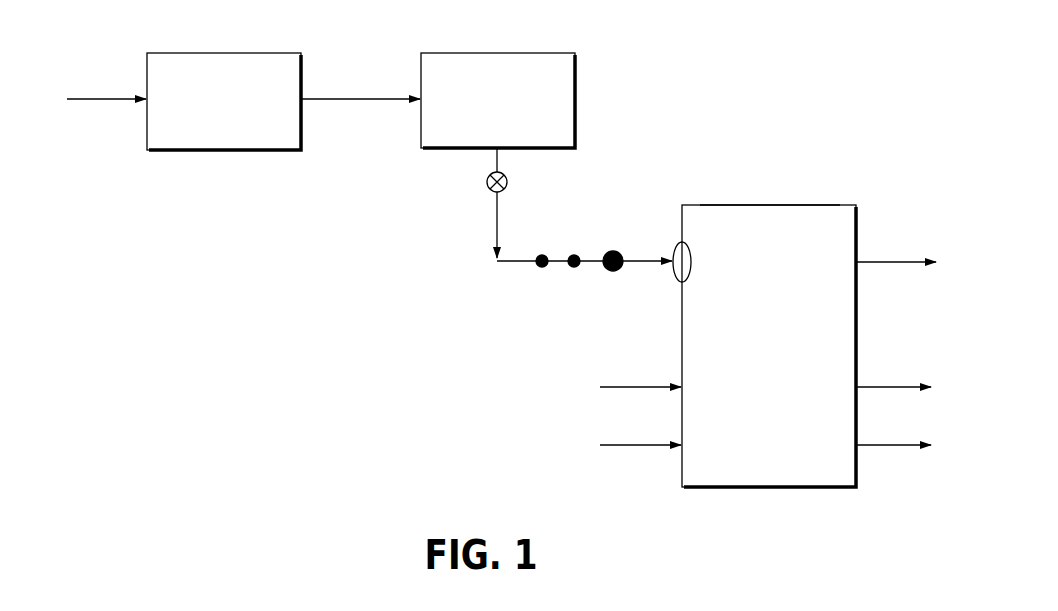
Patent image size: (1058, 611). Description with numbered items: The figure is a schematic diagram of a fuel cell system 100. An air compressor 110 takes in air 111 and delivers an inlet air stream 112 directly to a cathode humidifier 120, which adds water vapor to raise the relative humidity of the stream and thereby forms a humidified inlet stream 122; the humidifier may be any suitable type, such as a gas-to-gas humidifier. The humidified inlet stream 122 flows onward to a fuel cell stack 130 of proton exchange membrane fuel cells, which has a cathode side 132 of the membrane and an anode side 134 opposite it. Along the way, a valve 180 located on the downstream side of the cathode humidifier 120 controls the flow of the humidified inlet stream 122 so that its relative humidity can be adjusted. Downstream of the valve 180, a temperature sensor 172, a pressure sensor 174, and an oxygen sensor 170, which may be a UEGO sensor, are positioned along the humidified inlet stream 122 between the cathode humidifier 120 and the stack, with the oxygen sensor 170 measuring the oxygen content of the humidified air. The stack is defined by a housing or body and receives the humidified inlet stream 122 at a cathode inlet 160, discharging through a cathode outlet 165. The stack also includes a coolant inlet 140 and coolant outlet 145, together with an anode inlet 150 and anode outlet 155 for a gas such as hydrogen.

The fuel cell system 100 is at (756, 90).
The air compressor 110 is at (224, 101).
The air 111 is at (102, 97).
The inlet air stream 112 is at (372, 97).
The cathode humidifier 120 is at (498, 100).
The humidified inlet stream 122 is at (498, 225).
The valve 180 is at (486, 182).
The temperature sensor 172 is at (542, 254).
The pressure sensor 174 is at (574, 254).
The oxygen sensor 170 is at (613, 250).
The cathode inlet 160 is at (690, 247).
The fuel cell stack 130 is at (769, 346).
The cathode side 132 is at (766, 204).
The anode side 134 is at (768, 489).
The coolant inlet 140 is at (648, 385).
The anode inlet 150 is at (648, 443).
The cathode outlet 165 is at (884, 260).
The coolant outlet 145 is at (885, 385).
The anode outlet 155 is at (885, 443).